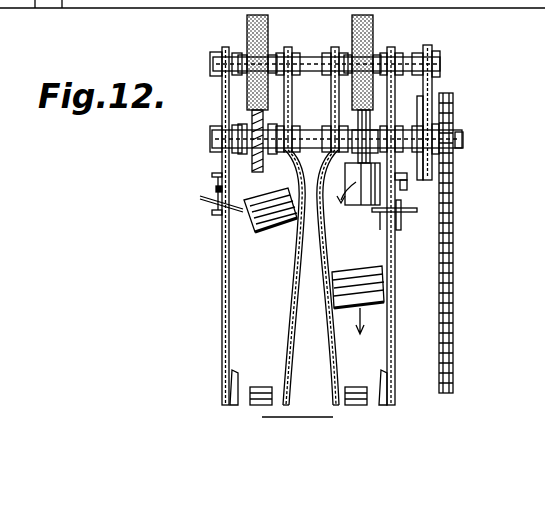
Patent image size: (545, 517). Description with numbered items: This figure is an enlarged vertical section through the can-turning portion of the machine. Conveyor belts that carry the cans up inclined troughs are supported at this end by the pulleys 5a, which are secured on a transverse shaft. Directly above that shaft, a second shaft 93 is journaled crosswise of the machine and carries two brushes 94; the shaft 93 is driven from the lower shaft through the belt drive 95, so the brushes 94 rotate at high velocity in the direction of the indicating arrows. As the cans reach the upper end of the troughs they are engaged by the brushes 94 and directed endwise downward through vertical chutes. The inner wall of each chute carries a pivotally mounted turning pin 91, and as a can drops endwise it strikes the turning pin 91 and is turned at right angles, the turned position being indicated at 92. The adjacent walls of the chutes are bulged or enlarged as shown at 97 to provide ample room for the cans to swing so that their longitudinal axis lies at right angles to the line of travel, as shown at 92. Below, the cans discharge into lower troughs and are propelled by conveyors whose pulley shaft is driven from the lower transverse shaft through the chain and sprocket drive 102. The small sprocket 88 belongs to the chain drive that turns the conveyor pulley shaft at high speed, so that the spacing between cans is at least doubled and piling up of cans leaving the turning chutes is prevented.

The shaft 93 is at (330, 58).
The sprocket 88 is at (208, 143).
The brushes 94 is at (247, 22).
The pulleys 5a is at (262, 118).
The belt drive 95 is at (378, 116).
The bulged chute walls 97 is at (326, 258).
The turning pin 91 is at (206, 207).
The turned can position 92 is at (384, 281).
The chain and sprocket drive 102 is at (454, 201).